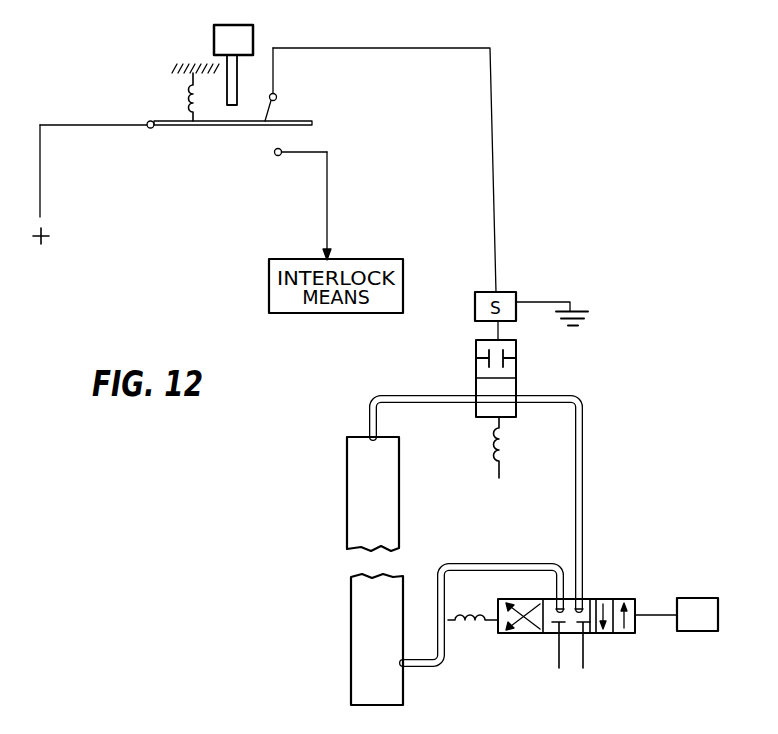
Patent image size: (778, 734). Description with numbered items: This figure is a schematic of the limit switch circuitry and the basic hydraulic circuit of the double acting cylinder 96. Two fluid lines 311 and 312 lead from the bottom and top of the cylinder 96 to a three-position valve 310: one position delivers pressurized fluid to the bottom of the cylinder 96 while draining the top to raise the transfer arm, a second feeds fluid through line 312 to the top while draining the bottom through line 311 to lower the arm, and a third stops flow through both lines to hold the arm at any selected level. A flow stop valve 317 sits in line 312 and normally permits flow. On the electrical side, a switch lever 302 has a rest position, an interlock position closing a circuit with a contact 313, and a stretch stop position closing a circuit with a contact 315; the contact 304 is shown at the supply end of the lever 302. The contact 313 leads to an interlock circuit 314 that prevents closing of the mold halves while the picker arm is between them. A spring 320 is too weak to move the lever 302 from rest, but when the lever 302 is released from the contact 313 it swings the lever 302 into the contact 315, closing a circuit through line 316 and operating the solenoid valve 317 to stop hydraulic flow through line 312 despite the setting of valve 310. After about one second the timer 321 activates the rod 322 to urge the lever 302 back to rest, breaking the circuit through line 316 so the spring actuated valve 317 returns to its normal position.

The timer 321 is at (252, 37).
The rod 322 is at (233, 80).
The spring 320 is at (190, 93).
The power supply contact 304 is at (150, 120).
The switch lever 302 is at (297, 119).
The contact 315 is at (268, 126).
The contact 313 is at (277, 156).
The interlock circuit 314 is at (327, 203).
The line 316 is at (494, 156).
The flow stop valve 317 is at (476, 350).
The fluid line 312 is at (584, 482).
The double acting cylinder 96 is at (347, 497).
The fluid line 311 is at (441, 668).
The valve 310 is at (615, 598).